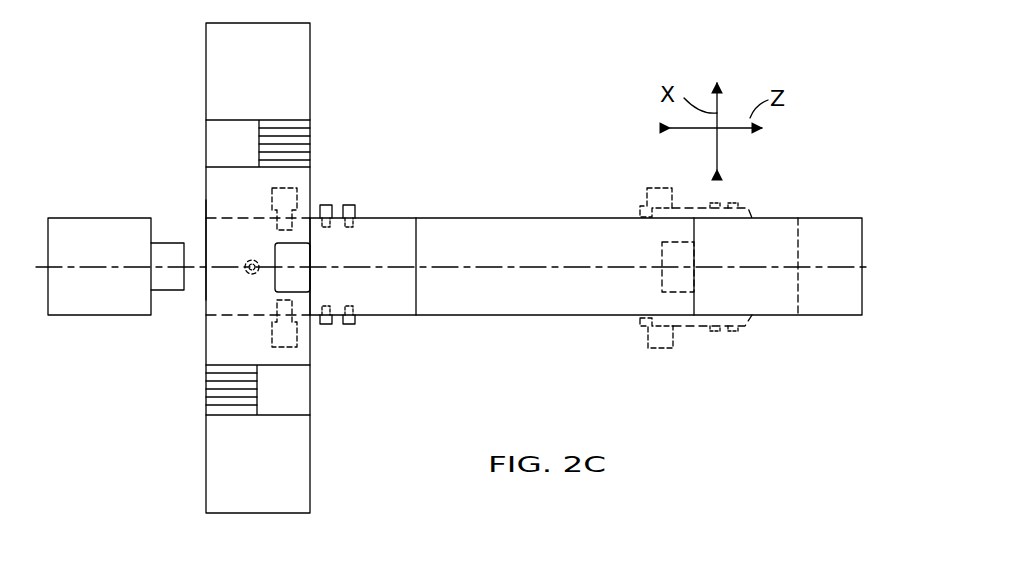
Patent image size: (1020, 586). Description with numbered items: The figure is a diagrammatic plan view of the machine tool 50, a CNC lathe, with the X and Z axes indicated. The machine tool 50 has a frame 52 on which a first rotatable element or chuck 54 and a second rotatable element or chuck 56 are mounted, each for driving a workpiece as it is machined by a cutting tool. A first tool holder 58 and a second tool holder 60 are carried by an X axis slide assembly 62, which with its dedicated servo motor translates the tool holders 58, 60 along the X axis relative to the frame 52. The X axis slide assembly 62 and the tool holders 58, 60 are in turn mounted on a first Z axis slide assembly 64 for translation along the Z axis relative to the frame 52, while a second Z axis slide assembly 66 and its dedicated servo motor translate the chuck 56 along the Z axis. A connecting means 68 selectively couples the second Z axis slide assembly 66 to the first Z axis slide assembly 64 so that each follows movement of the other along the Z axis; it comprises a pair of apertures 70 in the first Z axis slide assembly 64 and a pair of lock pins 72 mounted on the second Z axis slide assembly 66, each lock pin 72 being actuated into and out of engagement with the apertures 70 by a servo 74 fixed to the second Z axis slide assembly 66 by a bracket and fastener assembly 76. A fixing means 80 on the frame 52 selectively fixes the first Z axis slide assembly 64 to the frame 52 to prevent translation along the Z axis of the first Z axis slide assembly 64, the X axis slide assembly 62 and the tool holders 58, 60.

The machine tool 50 is at (457, 87).
The frame 52 is at (85, 217).
The first rotatable element or chuck 54 is at (162, 284).
The second rotatable element or chuck 56 is at (302, 278).
The first tool holder 58 is at (215, 405).
The second tool holder 60 is at (290, 120).
The X axis slide assembly 62 is at (205, 93).
The first Z axis slide assembly 64 is at (204, 250).
The second Z axis slide assembly 66 is at (420, 298).
The connecting means 68 is at (266, 218).
The apertures 70 is at (327, 205).
The lock pins 72 is at (658, 216).
The servo 74 is at (292, 188).
The bracket and fastener assembly 76 is at (360, 212).
The fixing means 80 is at (244, 270).